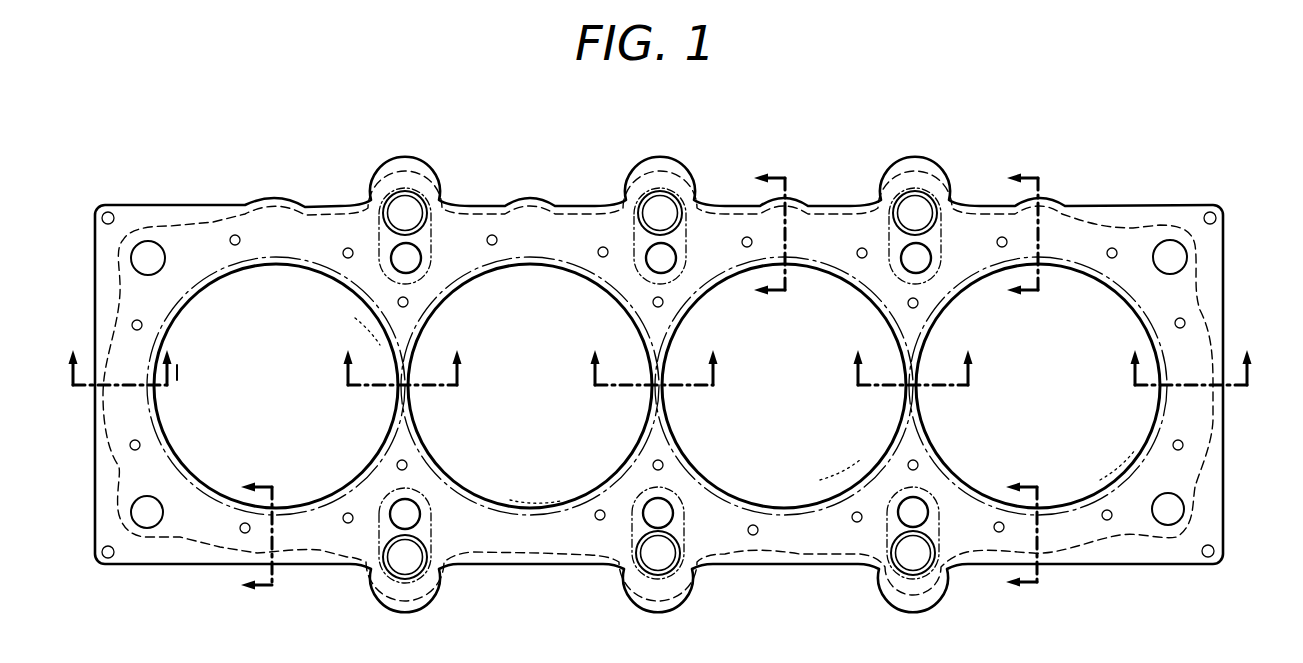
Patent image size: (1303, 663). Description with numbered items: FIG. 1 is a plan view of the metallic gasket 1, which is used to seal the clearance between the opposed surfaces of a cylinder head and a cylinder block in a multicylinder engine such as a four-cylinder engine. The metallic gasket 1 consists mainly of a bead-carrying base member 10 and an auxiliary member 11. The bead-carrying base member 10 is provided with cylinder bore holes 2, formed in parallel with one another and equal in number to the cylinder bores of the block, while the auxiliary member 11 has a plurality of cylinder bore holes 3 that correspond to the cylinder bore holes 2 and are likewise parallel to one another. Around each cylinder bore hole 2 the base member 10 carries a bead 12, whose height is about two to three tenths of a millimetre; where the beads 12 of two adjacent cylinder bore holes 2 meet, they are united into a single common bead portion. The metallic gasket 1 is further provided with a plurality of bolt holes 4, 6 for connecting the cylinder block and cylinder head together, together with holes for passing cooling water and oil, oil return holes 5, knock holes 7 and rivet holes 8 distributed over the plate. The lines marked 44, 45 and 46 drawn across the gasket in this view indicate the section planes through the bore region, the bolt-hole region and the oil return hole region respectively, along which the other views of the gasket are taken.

The metallic gasket 1 is at (565, 200).
The cylinder bore holes 2 is at (344, 285).
The cylinder bore holes 3 is at (369, 316).
The bolt holes 4 is at (153, 514).
The oil return holes 5 is at (407, 196).
The bolt holes 6 is at (413, 262).
The knock holes 7 is at (150, 249).
The rivet holes 8 is at (110, 214).
The bead-carrying base member 10 is at (1143, 216).
The auxiliary member 11 is at (1075, 235).
The bead 12 is at (201, 282).
The section line 44- 44 is at (664, 369).
The section line 45- 45 is at (662, 368).
The section line 46- 46 is at (648, 381).